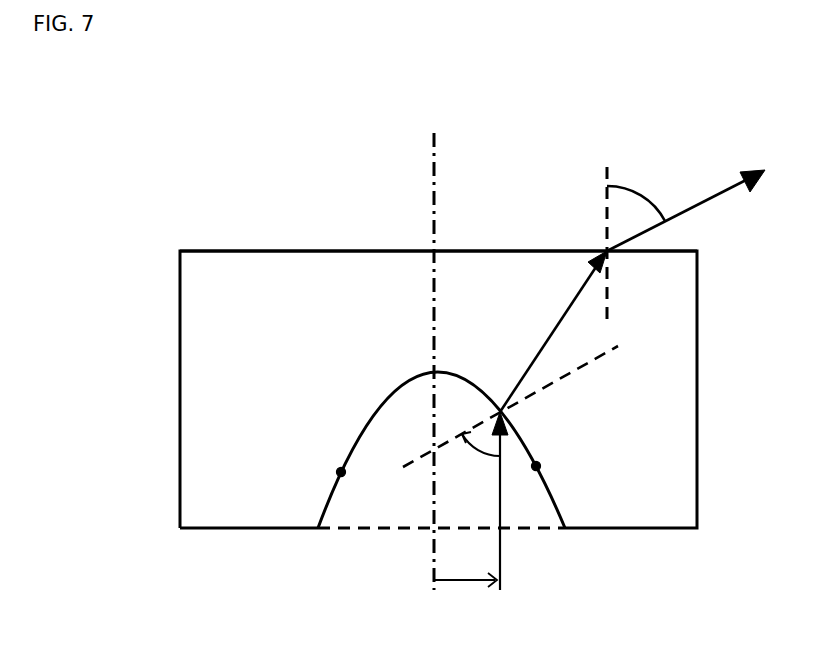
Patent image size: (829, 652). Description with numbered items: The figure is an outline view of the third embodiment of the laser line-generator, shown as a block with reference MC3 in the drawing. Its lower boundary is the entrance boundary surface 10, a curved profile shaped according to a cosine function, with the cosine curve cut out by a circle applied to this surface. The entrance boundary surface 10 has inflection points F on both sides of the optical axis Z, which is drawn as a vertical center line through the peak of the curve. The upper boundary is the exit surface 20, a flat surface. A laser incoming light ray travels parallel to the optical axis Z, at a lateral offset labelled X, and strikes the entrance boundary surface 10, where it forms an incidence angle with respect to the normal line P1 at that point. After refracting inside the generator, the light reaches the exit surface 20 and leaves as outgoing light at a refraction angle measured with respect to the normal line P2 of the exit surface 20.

The microchannel / optical member MC3 is at (341, 315).
The exit surface 20 is at (515, 249).
The entrance boundary surface 10 is at (362, 435).
The optical axis Z is at (438, 137).
The normal line P1 is at (530, 400).
The normal line P2 is at (606, 226).
The inflection points F is at (341, 472).
The distance from optical axis X is at (471, 501).